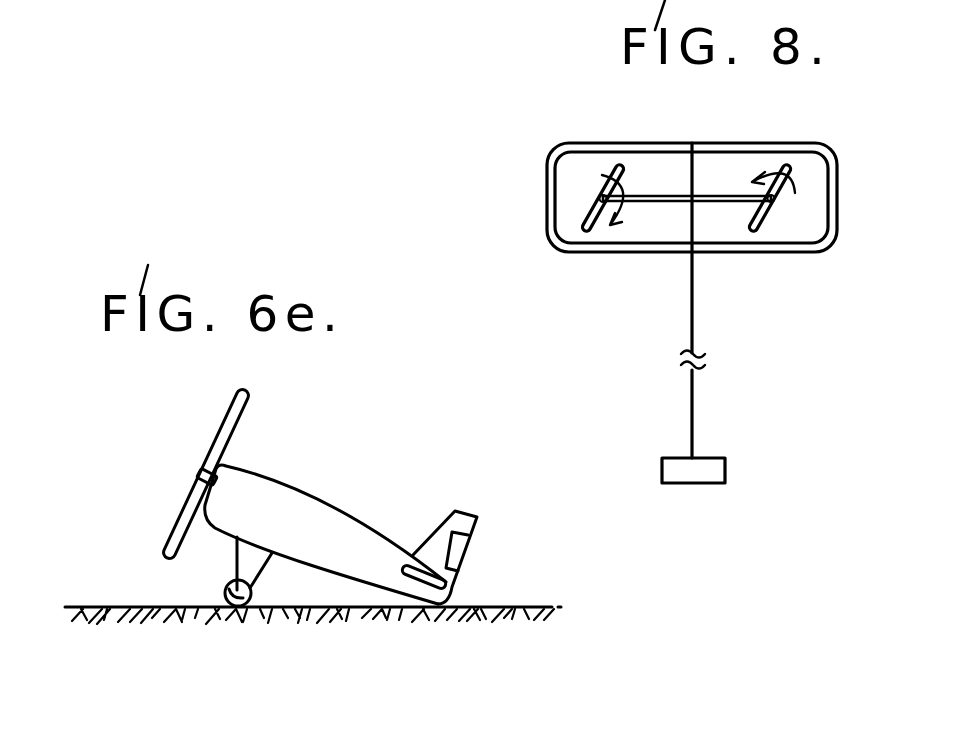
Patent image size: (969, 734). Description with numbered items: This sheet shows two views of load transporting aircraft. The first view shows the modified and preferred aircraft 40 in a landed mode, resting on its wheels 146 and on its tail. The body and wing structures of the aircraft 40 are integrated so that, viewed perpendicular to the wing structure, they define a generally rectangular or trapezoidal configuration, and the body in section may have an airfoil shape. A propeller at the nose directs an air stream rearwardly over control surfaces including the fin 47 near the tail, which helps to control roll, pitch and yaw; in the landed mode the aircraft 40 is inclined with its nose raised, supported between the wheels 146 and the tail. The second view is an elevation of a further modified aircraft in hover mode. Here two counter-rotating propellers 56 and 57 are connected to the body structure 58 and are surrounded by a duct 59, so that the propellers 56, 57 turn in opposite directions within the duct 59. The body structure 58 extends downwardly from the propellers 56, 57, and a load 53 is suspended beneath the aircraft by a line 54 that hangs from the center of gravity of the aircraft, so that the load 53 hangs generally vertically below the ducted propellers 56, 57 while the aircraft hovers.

In FIG. 6E, the aircraft 40 is at (315, 474).
In FIG. 6E, the fin 47 is at (435, 543).
In FIG. 6E, the wheels 146 is at (226, 583).
In FIG. 8, the load 53 is at (713, 470).
In FIG. 8, the line 54 is at (692, 328).
In FIG. 8, the counter-rotating propeller 56 is at (587, 215).
In FIG. 8, the counter-rotating propeller 57 is at (770, 217).
In FIG. 8, the body structure 58 is at (692, 143).
In FIG. 8, the duct 59 is at (594, 143).